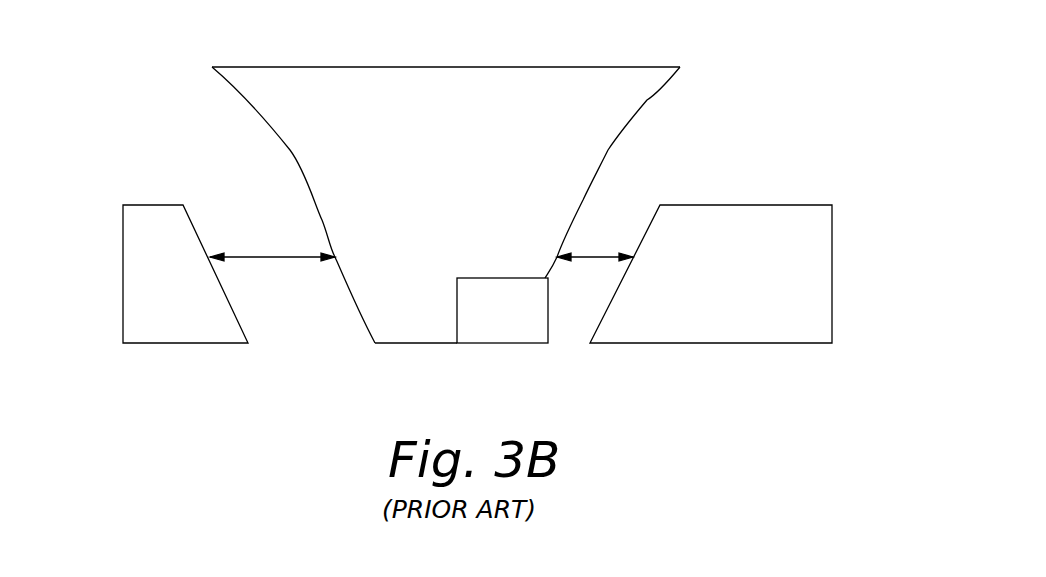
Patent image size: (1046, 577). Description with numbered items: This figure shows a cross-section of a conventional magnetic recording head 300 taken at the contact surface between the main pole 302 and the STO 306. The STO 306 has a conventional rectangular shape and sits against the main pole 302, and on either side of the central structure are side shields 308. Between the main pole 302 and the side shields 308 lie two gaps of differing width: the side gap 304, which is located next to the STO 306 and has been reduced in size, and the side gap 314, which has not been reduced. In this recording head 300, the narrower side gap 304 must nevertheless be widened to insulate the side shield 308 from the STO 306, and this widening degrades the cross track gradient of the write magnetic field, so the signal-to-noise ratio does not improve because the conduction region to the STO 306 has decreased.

The magnetic recording head 300 is at (158, 113).
The main pole 302 is at (408, 333).
The side gap 304 is at (595, 253).
The STO 306 is at (510, 333).
The side shield 308 is at (153, 333).
The side gap 314 is at (270, 255).